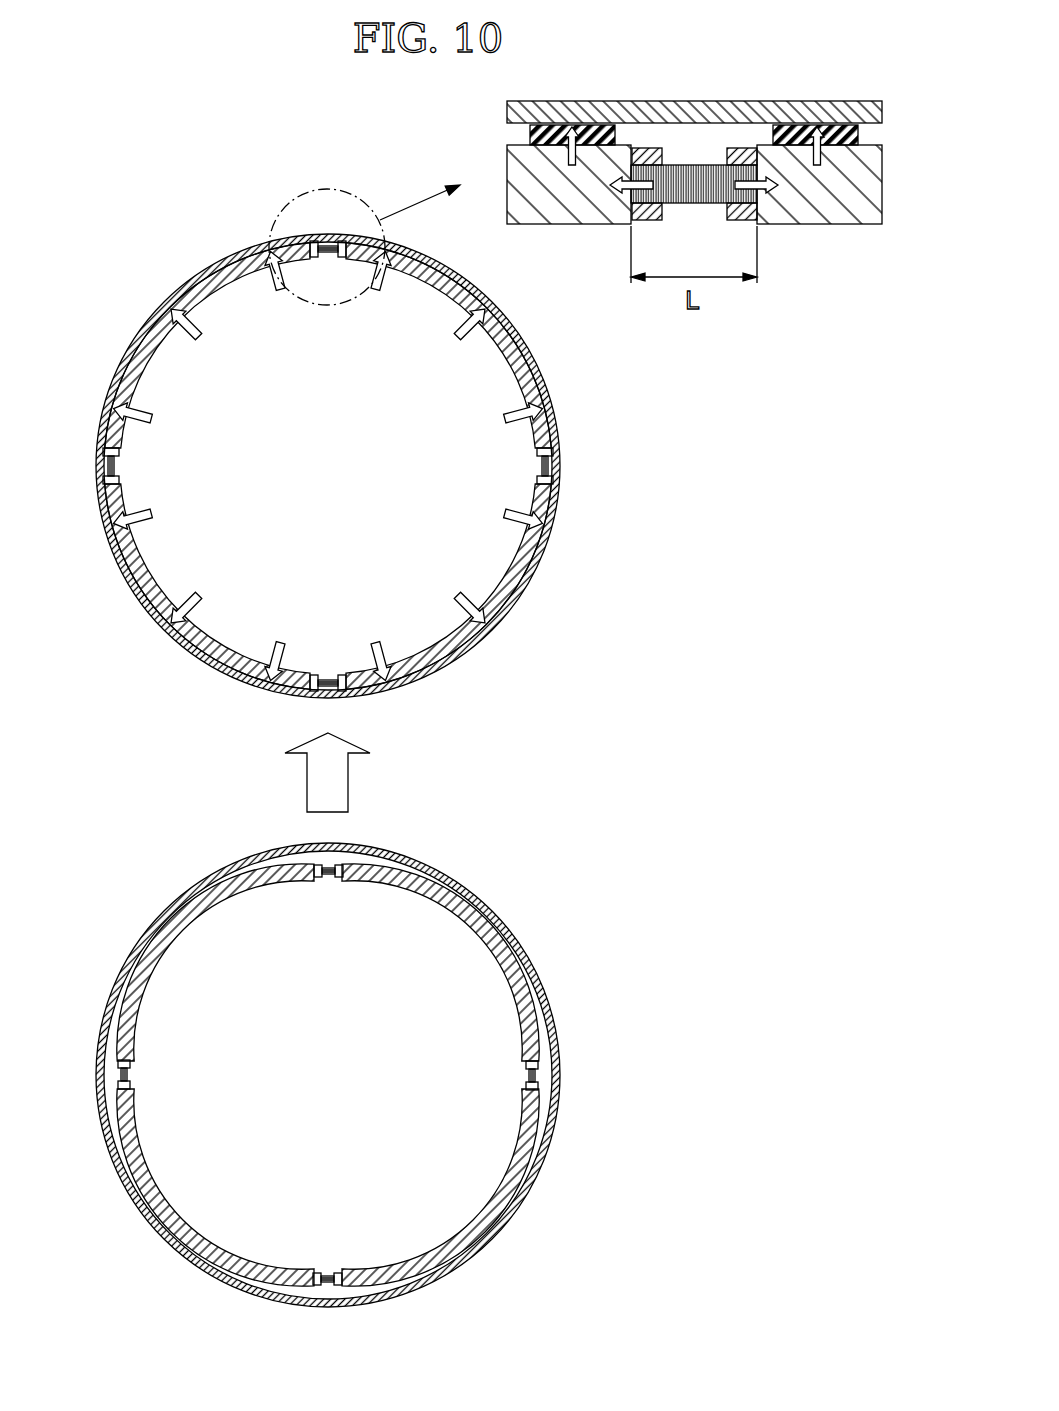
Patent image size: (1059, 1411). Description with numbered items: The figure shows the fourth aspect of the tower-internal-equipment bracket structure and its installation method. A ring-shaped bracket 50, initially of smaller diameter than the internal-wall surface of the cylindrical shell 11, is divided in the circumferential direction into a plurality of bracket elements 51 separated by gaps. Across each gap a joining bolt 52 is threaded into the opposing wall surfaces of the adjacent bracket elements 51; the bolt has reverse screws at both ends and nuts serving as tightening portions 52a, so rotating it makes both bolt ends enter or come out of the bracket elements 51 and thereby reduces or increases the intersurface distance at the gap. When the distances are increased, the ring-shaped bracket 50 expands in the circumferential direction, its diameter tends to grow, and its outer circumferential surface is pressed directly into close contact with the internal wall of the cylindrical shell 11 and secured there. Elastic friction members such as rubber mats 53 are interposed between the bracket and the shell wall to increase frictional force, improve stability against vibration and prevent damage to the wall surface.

The cylindrical shell 11 is at (550, 388).
The ring-shaped bracket 50 is at (492, 675).
The bracket element 51 is at (157, 350).
The joining bolt 52 is at (325, 258).
The tightening portion 52a is at (648, 148).
The rubber mat 53 is at (530, 135).